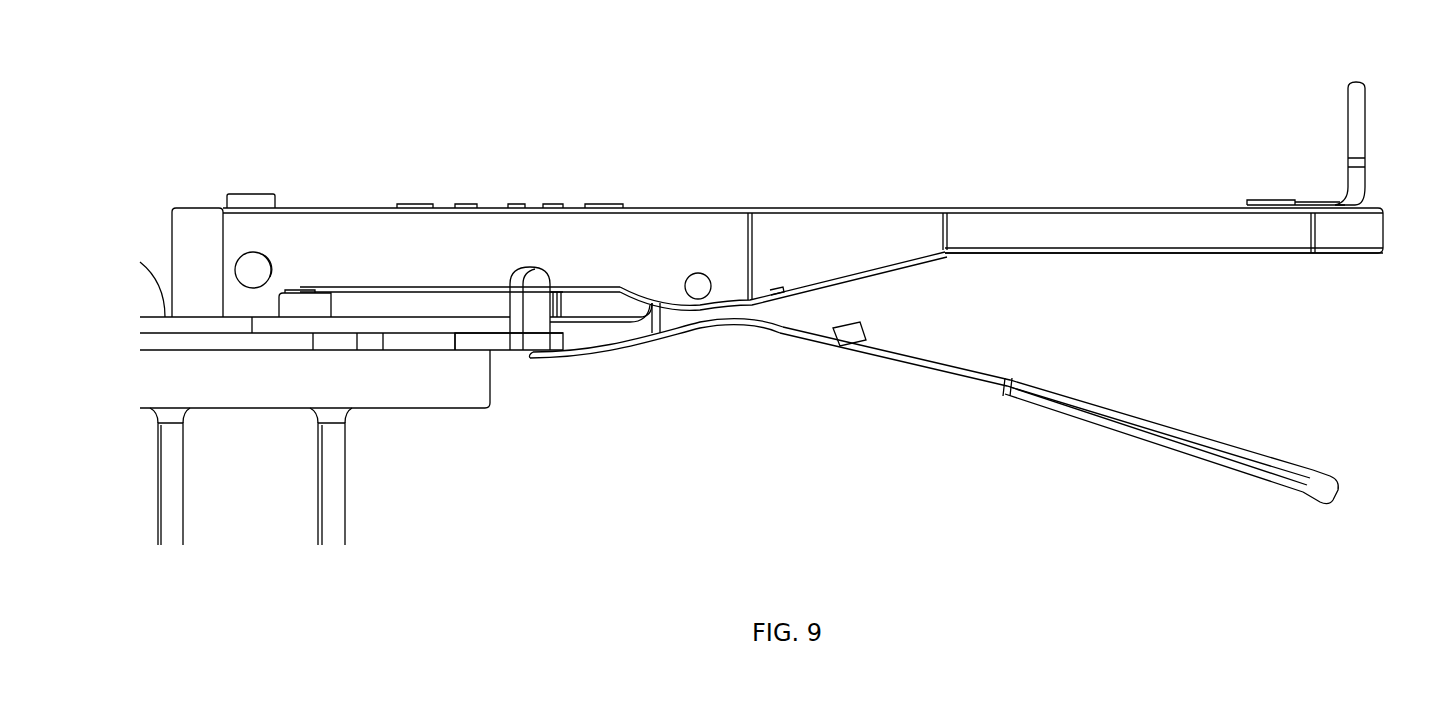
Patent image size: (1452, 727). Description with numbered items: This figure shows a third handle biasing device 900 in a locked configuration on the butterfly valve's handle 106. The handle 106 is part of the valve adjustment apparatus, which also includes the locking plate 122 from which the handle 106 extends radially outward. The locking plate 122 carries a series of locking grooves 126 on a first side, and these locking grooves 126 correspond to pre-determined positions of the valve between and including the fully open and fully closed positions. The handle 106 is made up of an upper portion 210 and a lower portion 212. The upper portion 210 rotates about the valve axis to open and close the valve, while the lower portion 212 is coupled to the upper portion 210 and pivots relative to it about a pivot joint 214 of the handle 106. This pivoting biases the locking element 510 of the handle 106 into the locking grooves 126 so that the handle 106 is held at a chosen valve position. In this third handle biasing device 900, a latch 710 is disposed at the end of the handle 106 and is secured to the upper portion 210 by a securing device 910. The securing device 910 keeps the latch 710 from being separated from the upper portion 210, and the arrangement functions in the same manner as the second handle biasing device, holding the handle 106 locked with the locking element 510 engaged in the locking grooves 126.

The third handle biasing device 900 is at (543, 88).
The handle 106 is at (1086, 200).
The locking plate 122 is at (425, 340).
The locking grooves 126 is at (522, 362).
The upper portion 210 is at (1163, 208).
The lower portion 212 is at (1183, 437).
The pivot joint 214 is at (698, 299).
The locking element 510 is at (597, 358).
The latch 710 is at (1357, 100).
The securing device 910 is at (1305, 200).